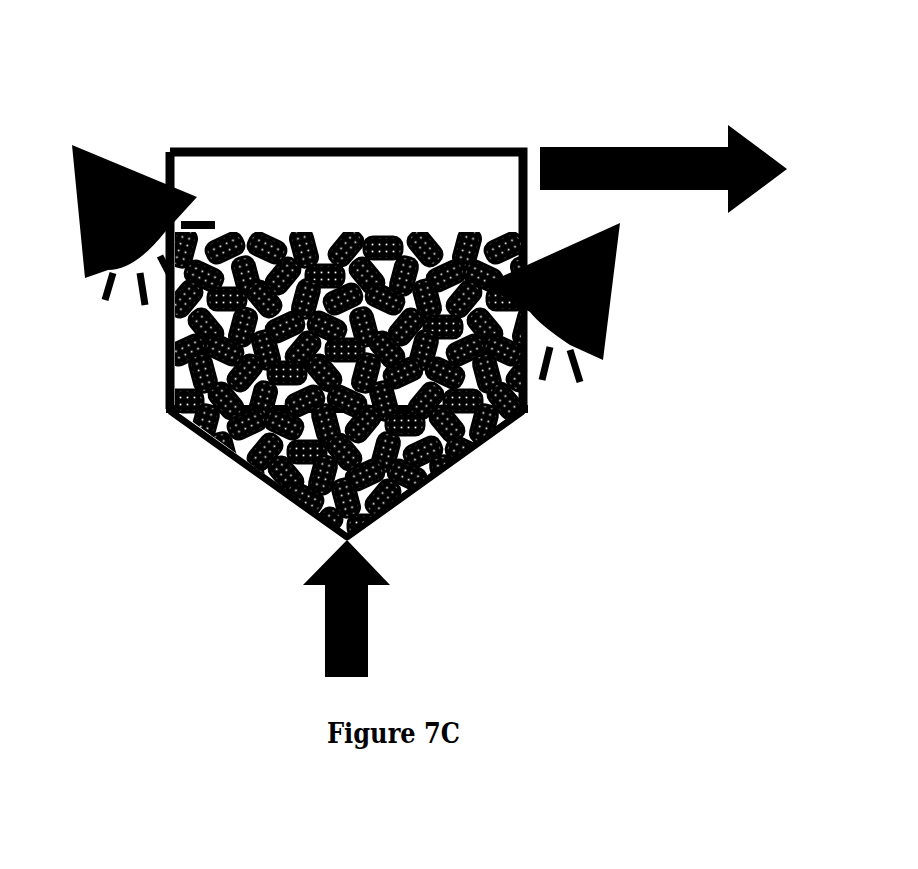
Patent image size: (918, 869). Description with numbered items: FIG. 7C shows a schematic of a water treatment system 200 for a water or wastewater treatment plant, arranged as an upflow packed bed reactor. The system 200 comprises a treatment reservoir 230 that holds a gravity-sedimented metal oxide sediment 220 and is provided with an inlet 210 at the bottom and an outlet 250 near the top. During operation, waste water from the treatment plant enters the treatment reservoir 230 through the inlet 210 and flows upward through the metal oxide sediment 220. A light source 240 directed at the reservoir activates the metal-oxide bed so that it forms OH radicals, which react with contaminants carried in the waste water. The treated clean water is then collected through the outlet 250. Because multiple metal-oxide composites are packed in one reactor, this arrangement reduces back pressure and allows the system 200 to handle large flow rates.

The water treatment system 200 is at (421, 126).
The inlet 210 is at (385, 617).
The metal oxide sediment 220 is at (297, 262).
The treatment reservoir 230 is at (155, 385).
The light source 240 is at (640, 292).
The outlet 250 is at (638, 136).